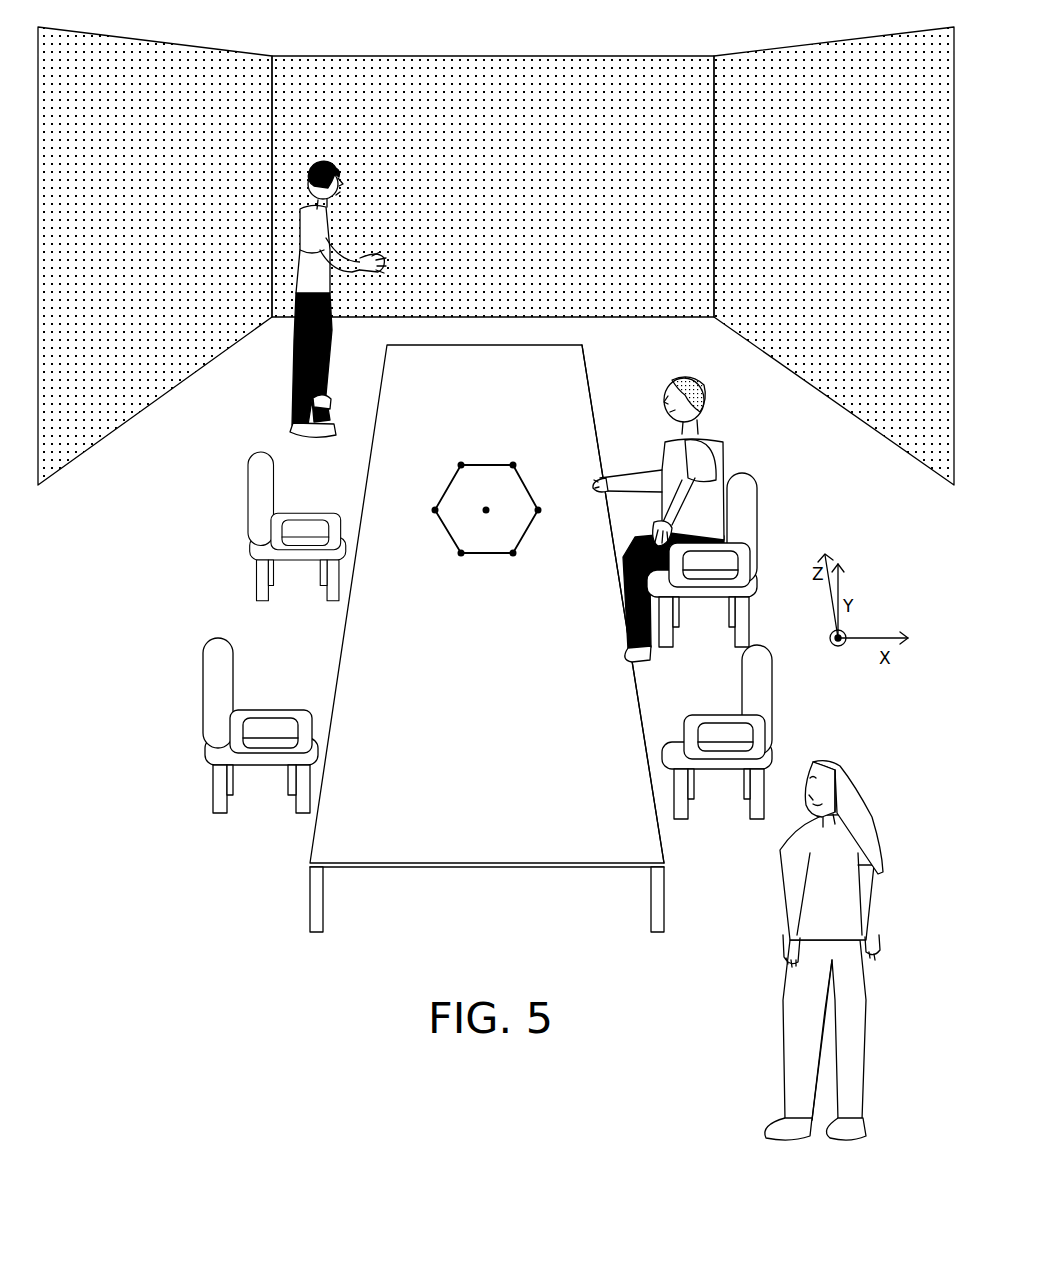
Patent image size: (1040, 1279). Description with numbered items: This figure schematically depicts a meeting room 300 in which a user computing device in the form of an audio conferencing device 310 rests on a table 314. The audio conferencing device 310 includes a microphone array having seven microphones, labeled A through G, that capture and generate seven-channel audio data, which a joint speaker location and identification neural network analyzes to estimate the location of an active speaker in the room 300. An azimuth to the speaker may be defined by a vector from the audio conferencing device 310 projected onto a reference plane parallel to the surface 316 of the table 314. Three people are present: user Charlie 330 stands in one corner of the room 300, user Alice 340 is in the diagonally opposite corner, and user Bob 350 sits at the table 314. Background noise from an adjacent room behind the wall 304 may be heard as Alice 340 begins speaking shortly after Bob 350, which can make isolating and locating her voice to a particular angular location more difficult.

The meeting room 300 is at (496, 247).
The wall 304 is at (610, 73).
The audio conferencing device 310 is at (487, 462).
The table 314 is at (548, 866).
The surface of table 316 is at (572, 398).
The user Charlie 330 is at (317, 364).
The user Alice 340 is at (780, 898).
The user Bob 350 is at (725, 470).